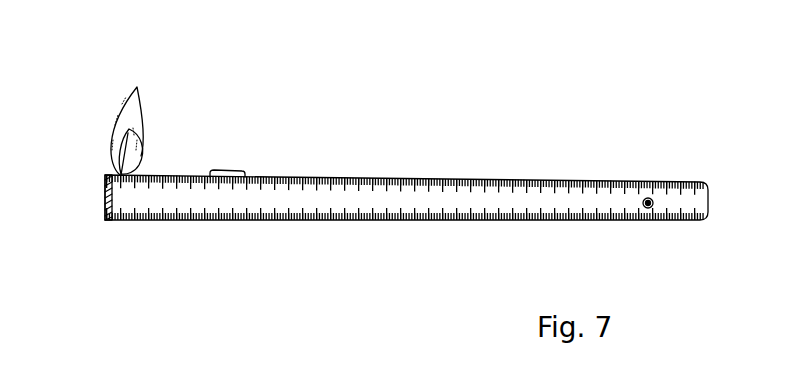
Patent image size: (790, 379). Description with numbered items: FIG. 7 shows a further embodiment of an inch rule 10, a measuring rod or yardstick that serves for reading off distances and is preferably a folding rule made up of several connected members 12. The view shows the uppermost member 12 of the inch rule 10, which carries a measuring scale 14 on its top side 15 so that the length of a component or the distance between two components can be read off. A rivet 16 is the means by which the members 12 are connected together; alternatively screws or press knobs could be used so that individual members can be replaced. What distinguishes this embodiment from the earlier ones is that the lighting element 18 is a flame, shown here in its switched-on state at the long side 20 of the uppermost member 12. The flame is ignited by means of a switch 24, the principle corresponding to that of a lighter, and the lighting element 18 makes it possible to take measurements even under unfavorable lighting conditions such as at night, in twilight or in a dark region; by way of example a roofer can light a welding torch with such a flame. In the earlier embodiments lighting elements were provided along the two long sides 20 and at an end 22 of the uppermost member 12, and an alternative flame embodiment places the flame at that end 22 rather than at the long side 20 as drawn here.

The inch rule 10 is at (90, 44).
The member 12 is at (451, 201).
The measuring scale 14 is at (693, 180).
The top side 15 is at (259, 205).
The rivet 16 is at (648, 208).
The lighting element 18 is at (138, 133).
The long side 20 is at (383, 177).
The end 22 is at (102, 192).
The switch 24 is at (218, 171).